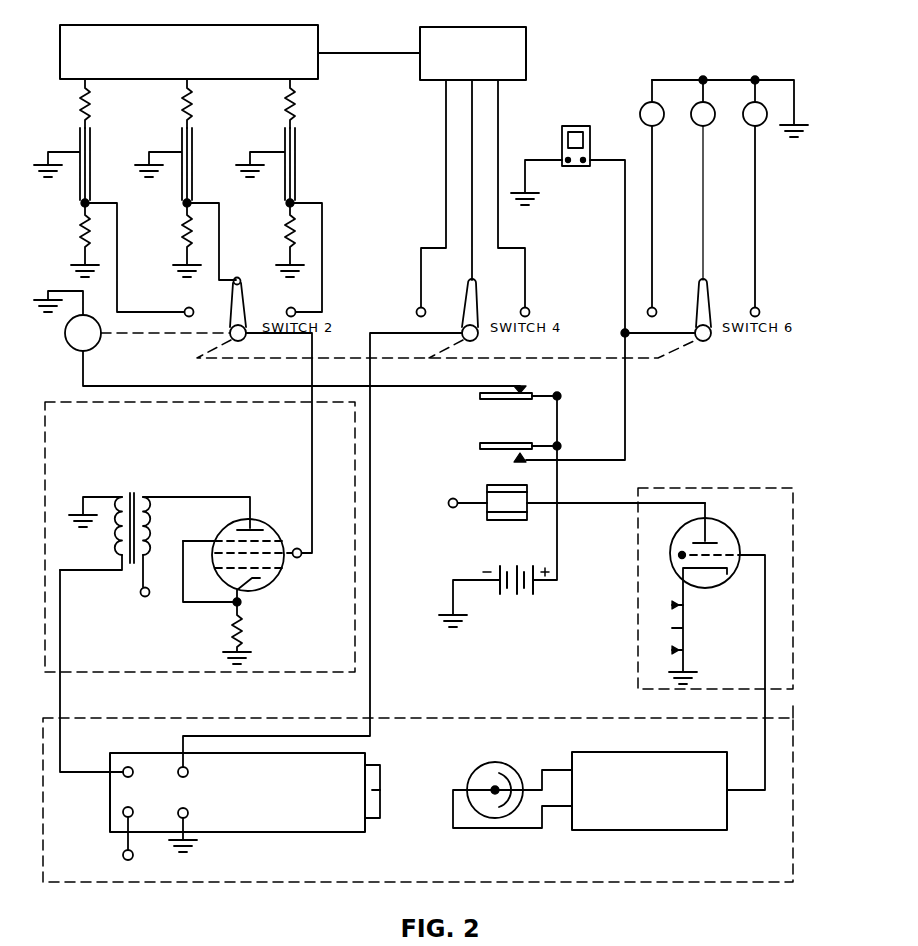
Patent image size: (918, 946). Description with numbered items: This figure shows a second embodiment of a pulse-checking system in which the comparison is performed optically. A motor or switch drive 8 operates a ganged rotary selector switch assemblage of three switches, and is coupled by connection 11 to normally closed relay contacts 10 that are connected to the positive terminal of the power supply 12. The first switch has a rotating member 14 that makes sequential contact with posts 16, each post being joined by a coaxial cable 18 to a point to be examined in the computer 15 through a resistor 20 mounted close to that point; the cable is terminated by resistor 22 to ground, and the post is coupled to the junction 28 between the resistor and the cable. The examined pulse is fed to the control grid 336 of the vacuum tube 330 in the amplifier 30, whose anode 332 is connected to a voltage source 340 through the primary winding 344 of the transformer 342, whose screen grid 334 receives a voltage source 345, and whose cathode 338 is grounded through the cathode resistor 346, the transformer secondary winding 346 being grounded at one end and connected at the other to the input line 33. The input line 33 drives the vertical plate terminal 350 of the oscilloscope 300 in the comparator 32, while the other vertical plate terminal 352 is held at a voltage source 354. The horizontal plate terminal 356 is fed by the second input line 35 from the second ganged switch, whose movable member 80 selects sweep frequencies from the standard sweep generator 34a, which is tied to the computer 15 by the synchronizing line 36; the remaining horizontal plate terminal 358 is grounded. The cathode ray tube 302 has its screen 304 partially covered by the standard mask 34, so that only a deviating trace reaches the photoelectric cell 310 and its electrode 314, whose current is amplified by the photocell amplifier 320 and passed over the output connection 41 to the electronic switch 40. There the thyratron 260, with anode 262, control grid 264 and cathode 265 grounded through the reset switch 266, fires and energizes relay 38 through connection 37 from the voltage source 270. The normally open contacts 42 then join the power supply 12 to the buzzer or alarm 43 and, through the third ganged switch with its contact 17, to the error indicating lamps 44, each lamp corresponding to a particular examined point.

The computer 15 is at (711, 302).
The synchronizing line 36 is at (369, 44).
The standard sweep generator 34a is at (473, 53).
The resistor 20 is at (90, 100).
The coaxial cable 18 is at (92, 145).
The junction 28 is at (82, 204).
The resistor 22 is at (82, 231).
The posts 16 is at (193, 309).
The rotating member 14 is at (246, 297).
The motor or switch drive 8 is at (65, 335).
The connection 11 is at (400, 388).
The switch lever 80 is at (478, 298).
The second input line 35 is at (370, 690).
The error indicating lamps 44 is at (724, 76).
The switch contact 17 is at (759, 309).
The buzzer or alarm 43 is at (591, 140).
The normally closed relay contacts 10 is at (500, 400).
The normally open contacts 42 is at (500, 452).
The power supply 12 is at (535, 590).
The voltage source 270 is at (449, 499).
The relay 38 is at (510, 520).
The connection 37 is at (582, 503).
The electronic switch 40 is at (715, 569).
The thyratron 260 is at (730, 527).
The anode 262 is at (690, 515).
The control grid 264 is at (745, 550).
The cathode 265 is at (712, 572).
The reset switch 266 is at (668, 612).
The amplifier 30 is at (200, 549).
The transformer 342 is at (146, 480).
The secondary winding / cathode resistor 346 is at (118, 548).
The primary winding 344 is at (150, 520).
The voltage source 340 is at (140, 594).
The vacuum tube 330 is at (268, 522).
The anode 332 is at (240, 522).
The screen grid 334 is at (225, 549).
The control grid 336 is at (222, 572).
The voltage source 345 is at (298, 547).
The cathode 338 is at (242, 600).
The input line 33 is at (59, 696).
The comparator 32 is at (418, 810).
The output connection 41 is at (794, 713).
The oscilloscope 300 is at (237, 792).
The vertical plate terminal 350 is at (130, 766).
The horizontal plate terminal 356 is at (188, 771).
The vertical plate terminal 352 is at (123, 812).
The horizontal plate terminal 358 is at (188, 814).
The voltage source 354 is at (123, 855).
The cathode ray tube 302 is at (372, 765).
The screen 304 is at (380, 820).
The standard mask 34 is at (382, 792).
The photoelectric cell 310 is at (503, 783).
The photocell anode 314 is at (492, 786).
The photocell amplifier 320 is at (649, 791).